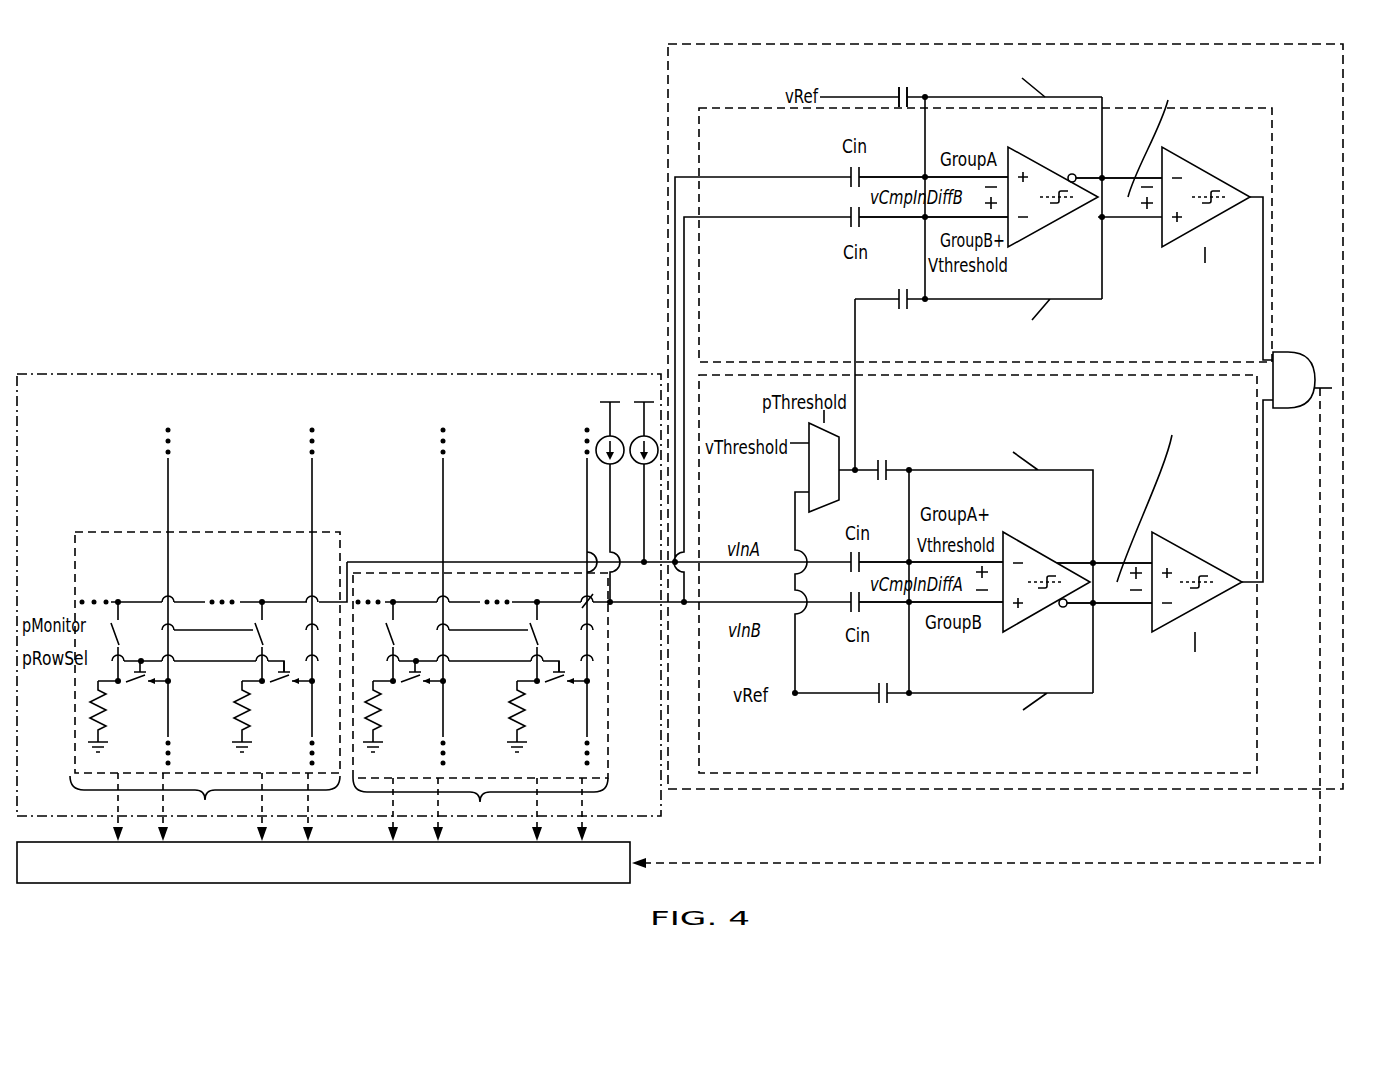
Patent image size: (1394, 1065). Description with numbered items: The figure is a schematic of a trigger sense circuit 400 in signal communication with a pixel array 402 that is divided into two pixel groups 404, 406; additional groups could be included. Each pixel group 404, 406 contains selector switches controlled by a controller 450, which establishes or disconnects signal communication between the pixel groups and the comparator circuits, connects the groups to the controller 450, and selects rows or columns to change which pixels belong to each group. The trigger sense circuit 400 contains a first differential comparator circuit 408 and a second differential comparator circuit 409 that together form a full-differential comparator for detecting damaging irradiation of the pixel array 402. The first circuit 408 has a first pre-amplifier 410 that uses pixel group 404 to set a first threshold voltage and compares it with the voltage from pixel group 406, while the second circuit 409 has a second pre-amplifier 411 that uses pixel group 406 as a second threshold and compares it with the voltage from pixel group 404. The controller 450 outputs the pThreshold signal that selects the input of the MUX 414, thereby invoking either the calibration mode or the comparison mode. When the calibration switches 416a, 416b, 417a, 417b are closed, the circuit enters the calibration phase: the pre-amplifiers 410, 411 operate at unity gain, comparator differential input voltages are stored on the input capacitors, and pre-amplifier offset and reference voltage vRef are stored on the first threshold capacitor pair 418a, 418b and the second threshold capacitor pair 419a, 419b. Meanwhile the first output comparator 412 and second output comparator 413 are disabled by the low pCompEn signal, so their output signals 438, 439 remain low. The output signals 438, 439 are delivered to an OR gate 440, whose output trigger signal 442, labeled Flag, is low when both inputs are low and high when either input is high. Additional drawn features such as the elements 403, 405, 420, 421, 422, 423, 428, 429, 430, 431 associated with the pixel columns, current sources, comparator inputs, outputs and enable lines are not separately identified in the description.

The trigger sense circuit 400 is at (645, 127).
The pixel array 402 is at (282, 362).
The column line switch 403 is at (603, 443).
The pixel group 404 is at (113, 524).
The current sources 405 is at (631, 418).
The pixel group 406 is at (496, 564).
The first differential comparator circuit 408 is at (1264, 681).
The second differential comparator circuit 409 is at (1282, 159).
The first pre-amplifier 410 is at (1041, 544).
The second pre-amplifier 411 is at (1054, 165).
The first output comparator 412 is at (1213, 544).
The second output comparator 413 is at (1230, 157).
The MUX 414 is at (810, 512).
The calibration switch 416a is at (1050, 710).
The calibration switch 416b is at (1045, 457).
The calibration switch 417a is at (1060, 326).
The calibration switch 417b is at (1050, 82).
The first threshold capacitor 418a is at (878, 702).
The first threshold capacitor 418b is at (892, 464).
The second threshold capacitor 419a is at (895, 296).
The second threshold capacitor 419b is at (895, 90).
The comparator input 420 is at (1003, 548).
The comparator input 421 is at (1012, 152).
The comparator input 422 is at (1022, 628).
The comparator input 423 is at (1023, 238).
The comparator differential output 428 is at (1162, 548).
The comparator differential output 429 is at (1172, 160).
The comparator enable input 430 is at (1165, 612).
The comparator enable input 431 is at (1163, 241).
The output signal 438 is at (1265, 480).
The output signal 439 is at (1274, 265).
The OR gate 440 is at (1285, 352).
The output trigger signal 442 is at (1343, 585).
The controller 450 is at (345, 875).